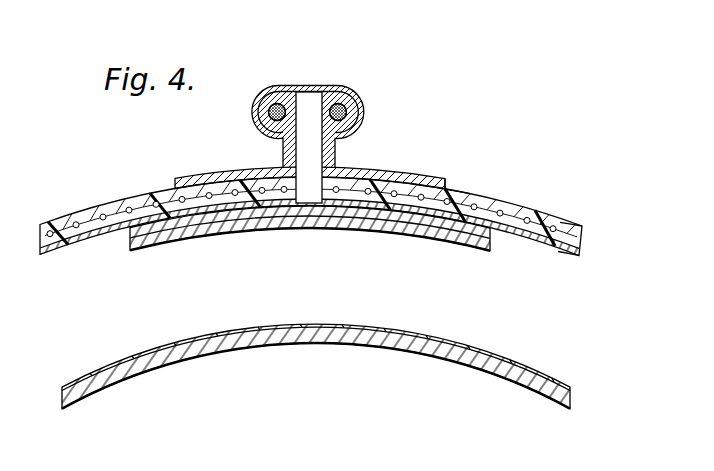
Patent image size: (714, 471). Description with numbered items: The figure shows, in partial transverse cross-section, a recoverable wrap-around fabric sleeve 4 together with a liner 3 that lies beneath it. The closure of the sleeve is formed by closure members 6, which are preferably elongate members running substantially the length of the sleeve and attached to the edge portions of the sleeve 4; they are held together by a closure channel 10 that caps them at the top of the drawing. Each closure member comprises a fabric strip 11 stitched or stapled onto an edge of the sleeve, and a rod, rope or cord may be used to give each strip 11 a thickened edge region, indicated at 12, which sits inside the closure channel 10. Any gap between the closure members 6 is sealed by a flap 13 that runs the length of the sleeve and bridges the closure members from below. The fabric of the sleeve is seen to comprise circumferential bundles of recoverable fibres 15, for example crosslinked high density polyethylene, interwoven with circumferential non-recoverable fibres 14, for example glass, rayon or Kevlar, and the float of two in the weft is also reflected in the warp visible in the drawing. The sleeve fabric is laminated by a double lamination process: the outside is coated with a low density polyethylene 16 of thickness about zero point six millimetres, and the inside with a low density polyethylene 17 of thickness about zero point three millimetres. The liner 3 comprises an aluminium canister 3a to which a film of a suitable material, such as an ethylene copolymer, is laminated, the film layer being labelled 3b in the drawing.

The liner 3 is at (354, 340).
The aluminium canister 3a is at (568, 403).
The upper layer of roof panel 3b is at (533, 368).
The recoverable wrap-around fabric sleeve 4 is at (68, 214).
The closure members 6 is at (334, 100).
The closure channel 10 is at (292, 84).
The fabric strip 11 is at (183, 177).
The thickened edge region 12 is at (353, 103).
The flap 13 is at (474, 249).
The non-recoverable fibres 14 is at (452, 190).
The recoverable fibres 15 is at (457, 200).
The low density polyethylene (outside coating) 16 is at (592, 229).
The low density polyethylene (inside coating) 17 is at (593, 259).